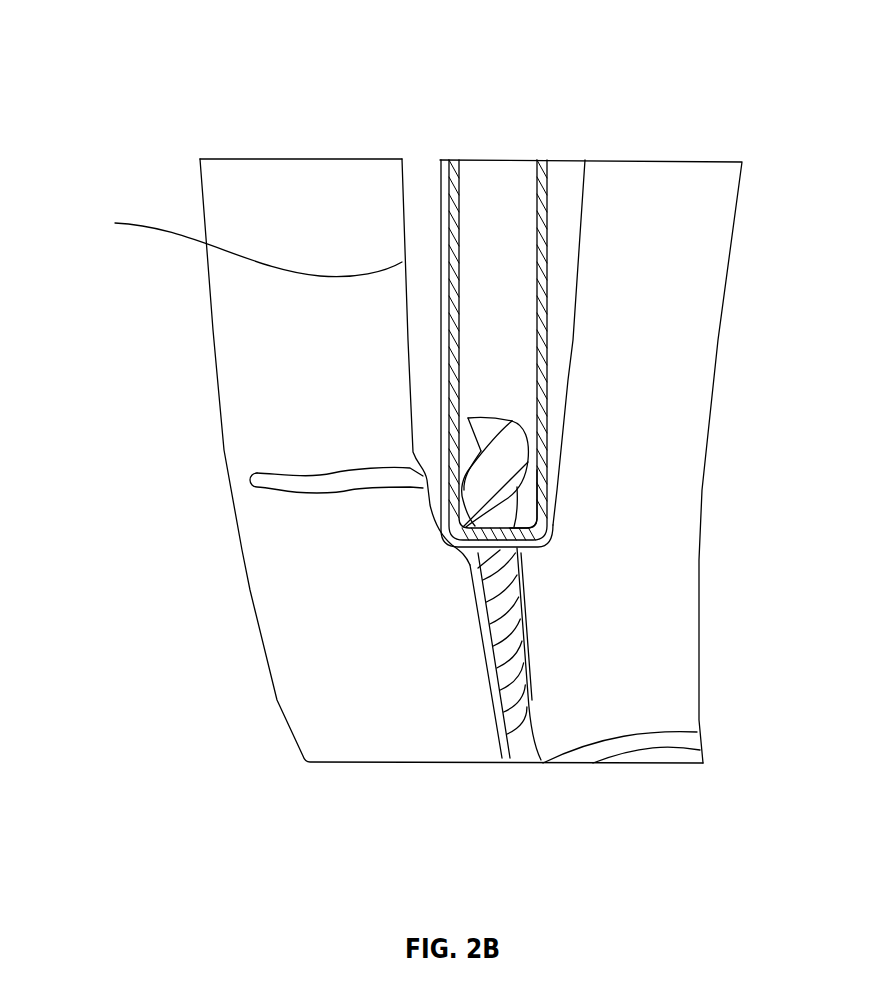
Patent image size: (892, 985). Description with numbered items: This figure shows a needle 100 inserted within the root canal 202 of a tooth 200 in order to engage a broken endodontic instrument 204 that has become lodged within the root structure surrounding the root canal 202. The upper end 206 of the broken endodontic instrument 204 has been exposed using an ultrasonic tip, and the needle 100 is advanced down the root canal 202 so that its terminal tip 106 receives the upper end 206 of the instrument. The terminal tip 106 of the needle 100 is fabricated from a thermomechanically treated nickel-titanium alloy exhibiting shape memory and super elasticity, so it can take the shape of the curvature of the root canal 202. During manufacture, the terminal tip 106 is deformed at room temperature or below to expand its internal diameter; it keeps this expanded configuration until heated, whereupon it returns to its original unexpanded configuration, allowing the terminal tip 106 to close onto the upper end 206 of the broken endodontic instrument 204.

The needle 100 is at (547, 207).
The terminal tip 106 is at (542, 492).
The tooth 200 is at (205, 192).
The root canal 202 is at (238, 244).
The broken endodontic instrument 204 is at (477, 613).
The upper end 206 is at (465, 439).